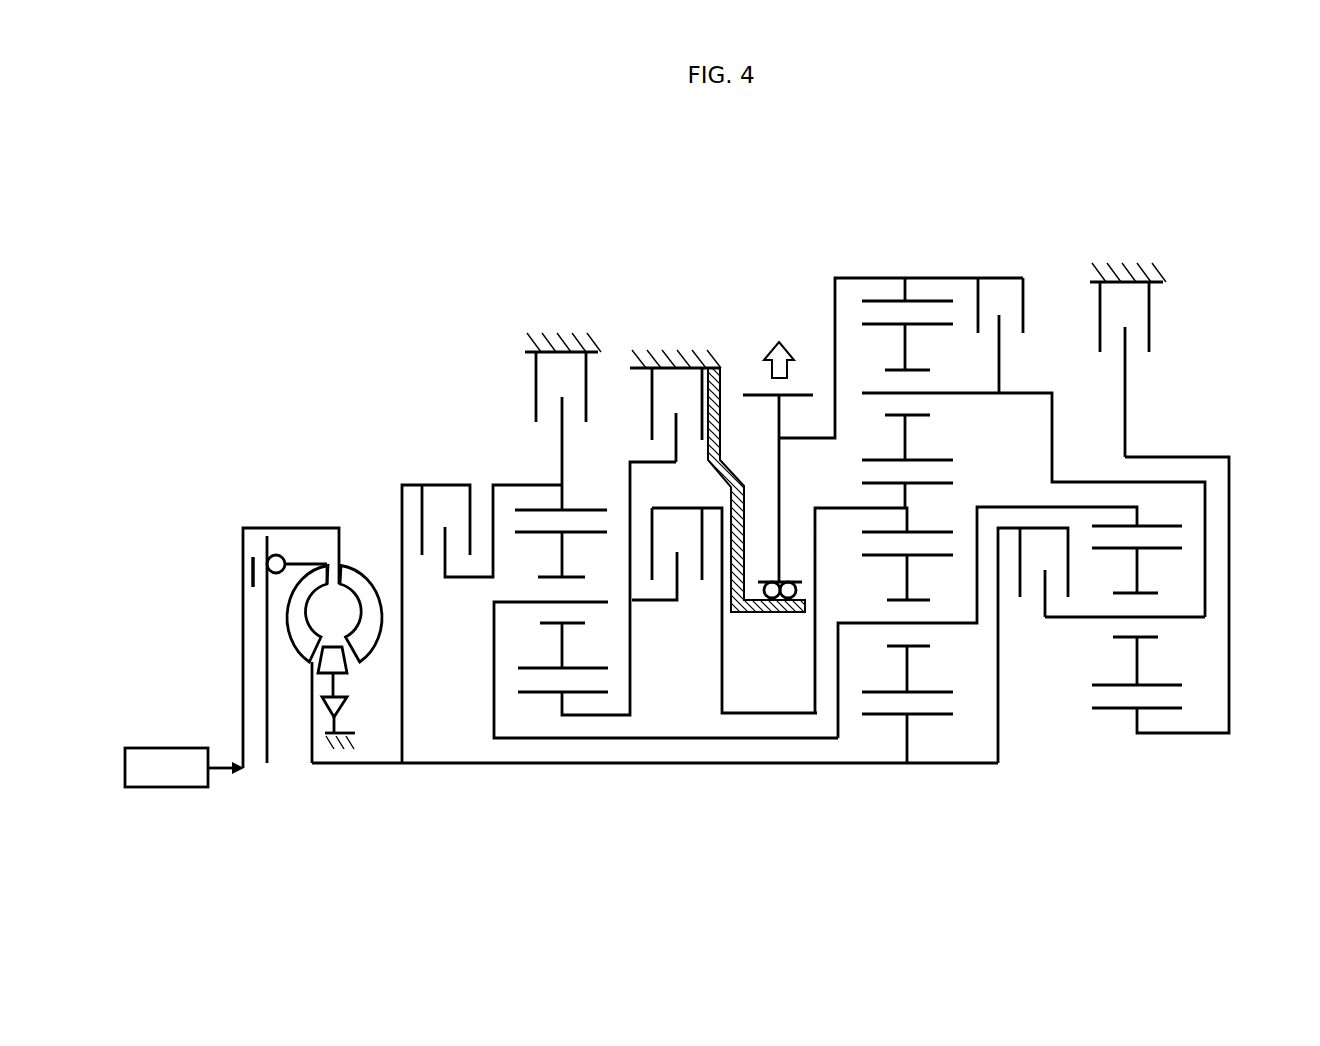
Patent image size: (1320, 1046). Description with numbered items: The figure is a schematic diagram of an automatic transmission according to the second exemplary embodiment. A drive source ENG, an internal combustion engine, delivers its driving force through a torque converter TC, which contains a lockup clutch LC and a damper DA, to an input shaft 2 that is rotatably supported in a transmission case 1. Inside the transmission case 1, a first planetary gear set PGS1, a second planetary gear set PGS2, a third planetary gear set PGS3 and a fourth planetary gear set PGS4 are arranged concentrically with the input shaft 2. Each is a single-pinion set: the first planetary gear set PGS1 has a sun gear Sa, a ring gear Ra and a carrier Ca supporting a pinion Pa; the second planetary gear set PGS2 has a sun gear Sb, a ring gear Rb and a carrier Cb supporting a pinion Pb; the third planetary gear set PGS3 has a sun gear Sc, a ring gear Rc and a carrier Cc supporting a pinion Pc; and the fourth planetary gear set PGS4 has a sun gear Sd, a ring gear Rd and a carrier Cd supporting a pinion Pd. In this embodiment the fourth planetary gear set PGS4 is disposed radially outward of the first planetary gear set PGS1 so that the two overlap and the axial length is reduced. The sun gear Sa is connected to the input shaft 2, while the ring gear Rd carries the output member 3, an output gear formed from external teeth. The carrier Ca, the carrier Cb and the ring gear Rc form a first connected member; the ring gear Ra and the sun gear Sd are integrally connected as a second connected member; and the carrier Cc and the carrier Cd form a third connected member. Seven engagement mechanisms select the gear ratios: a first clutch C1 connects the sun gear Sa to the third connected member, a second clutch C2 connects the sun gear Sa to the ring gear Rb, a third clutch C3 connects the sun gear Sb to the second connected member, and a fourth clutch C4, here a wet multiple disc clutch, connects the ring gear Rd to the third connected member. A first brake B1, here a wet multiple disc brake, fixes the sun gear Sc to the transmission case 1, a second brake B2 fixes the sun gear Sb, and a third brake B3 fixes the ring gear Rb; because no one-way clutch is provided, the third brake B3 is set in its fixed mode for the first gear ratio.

The drive source ENG is at (184, 767).
The torque converter TC is at (349, 526).
The lockup clutch LC is at (236, 564).
The damper DA is at (268, 540).
The transmission case 1 is at (357, 736).
The input shaft 2 is at (372, 766).
The output member 3 is at (806, 393).
The first clutch C1 is at (1033, 645).
The second clutch C2 is at (482, 624).
The third clutch C3 is at (724, 610).
The fourth clutch C4 is at (1000, 335).
The first brake B1 is at (1124, 369).
The second brake B2 is at (677, 415).
The third brake B3 is at (561, 431).
The first planetary gear set PGS1 is at (971, 677).
The second planetary gear set PGS2 is at (636, 646).
The third planetary gear set PGS3 is at (1131, 636).
The fourth planetary gear set PGS4 is at (992, 409).
The sun gear Sa is at (890, 716).
The carrier Ca is at (975, 625).
The ring gear Ra is at (875, 534).
The pinion Pa is at (877, 695).
The sun gear Sb is at (540, 695).
The carrier Cb is at (515, 603).
The ring gear Rb is at (590, 508).
The pinion Pb is at (533, 675).
The sun gear Sc is at (1113, 710).
The carrier Cc is at (1200, 620).
The ring gear Rc is at (1160, 523).
The pinion Pc is at (1108, 688).
The sun gear Sd is at (940, 483).
The carrier Cd is at (870, 390).
The ring gear Rd is at (932, 298).
The pinion Pd is at (930, 458).